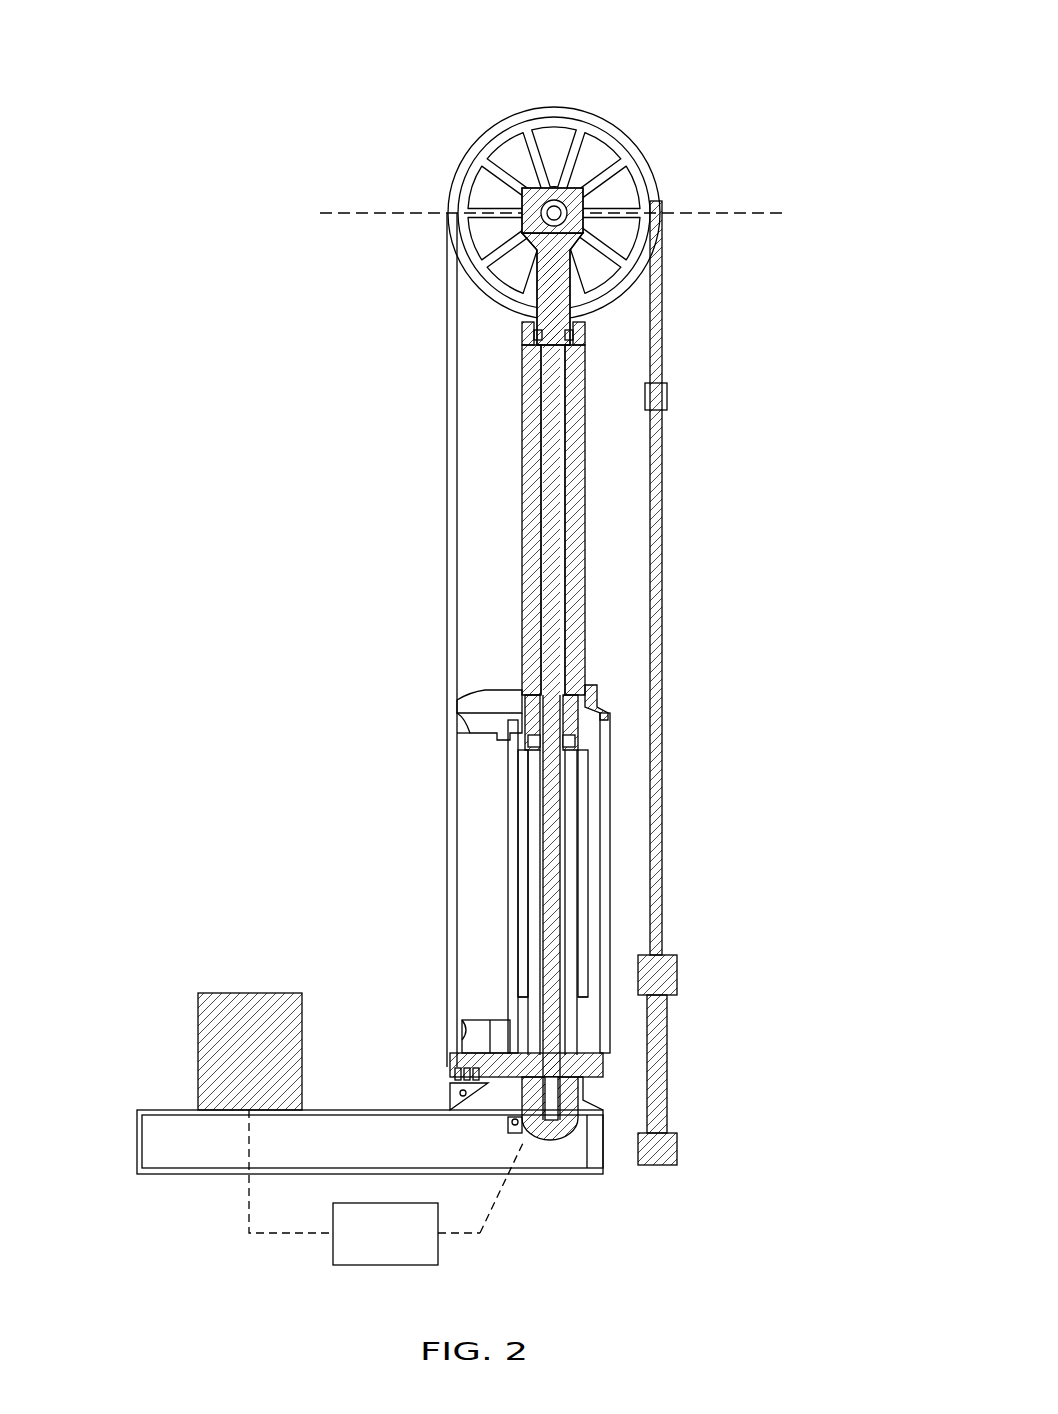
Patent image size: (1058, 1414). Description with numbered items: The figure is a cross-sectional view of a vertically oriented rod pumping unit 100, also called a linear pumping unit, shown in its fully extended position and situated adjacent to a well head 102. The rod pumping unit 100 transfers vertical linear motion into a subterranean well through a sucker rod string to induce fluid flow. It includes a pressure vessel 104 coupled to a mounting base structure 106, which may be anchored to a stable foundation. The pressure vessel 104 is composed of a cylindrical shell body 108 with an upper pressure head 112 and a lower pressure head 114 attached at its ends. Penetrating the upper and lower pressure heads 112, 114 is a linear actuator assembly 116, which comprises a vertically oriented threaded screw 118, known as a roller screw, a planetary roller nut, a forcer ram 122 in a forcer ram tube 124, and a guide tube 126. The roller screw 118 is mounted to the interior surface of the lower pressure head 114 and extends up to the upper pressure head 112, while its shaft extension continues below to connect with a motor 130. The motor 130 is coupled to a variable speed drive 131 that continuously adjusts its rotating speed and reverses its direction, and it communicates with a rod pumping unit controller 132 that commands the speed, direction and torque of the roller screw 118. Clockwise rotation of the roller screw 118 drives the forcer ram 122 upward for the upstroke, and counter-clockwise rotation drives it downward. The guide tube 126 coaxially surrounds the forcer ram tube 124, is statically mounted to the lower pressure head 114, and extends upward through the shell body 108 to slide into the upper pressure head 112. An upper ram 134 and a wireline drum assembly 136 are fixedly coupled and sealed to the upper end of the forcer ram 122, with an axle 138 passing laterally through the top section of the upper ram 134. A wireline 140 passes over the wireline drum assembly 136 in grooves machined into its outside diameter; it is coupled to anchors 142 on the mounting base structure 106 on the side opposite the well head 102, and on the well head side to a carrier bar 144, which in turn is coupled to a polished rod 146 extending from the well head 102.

The rod pumping unit 100 is at (684, 52).
The well head 102 is at (677, 1060).
The pressure vessel 104 is at (447, 808).
The mounting base structure 106 is at (142, 1145).
The shell body 108 is at (610, 822).
The upper pressure head 112 is at (490, 692).
The lower pressure head 114 is at (452, 1065).
The linear actuator assembly 116 is at (598, 704).
The threaded screw 118 is at (543, 910).
The forcer ram 122 is at (598, 744).
The forcer ram tube 124 is at (522, 390).
The guide tube 126 is at (536, 962).
The motor 130 is at (549, 1140).
The variable speed drive 131 is at (333, 1253).
The rod pumping unit controller 132 is at (198, 1050).
The upper ram 134 is at (522, 240).
The wireline drum assembly 136 is at (550, 107).
The axle 138 is at (522, 198).
The wireline 140 is at (447, 468).
The anchors 142 is at (460, 1105).
The carrier bar 144 is at (667, 392).
The polished rod 146 is at (662, 317).